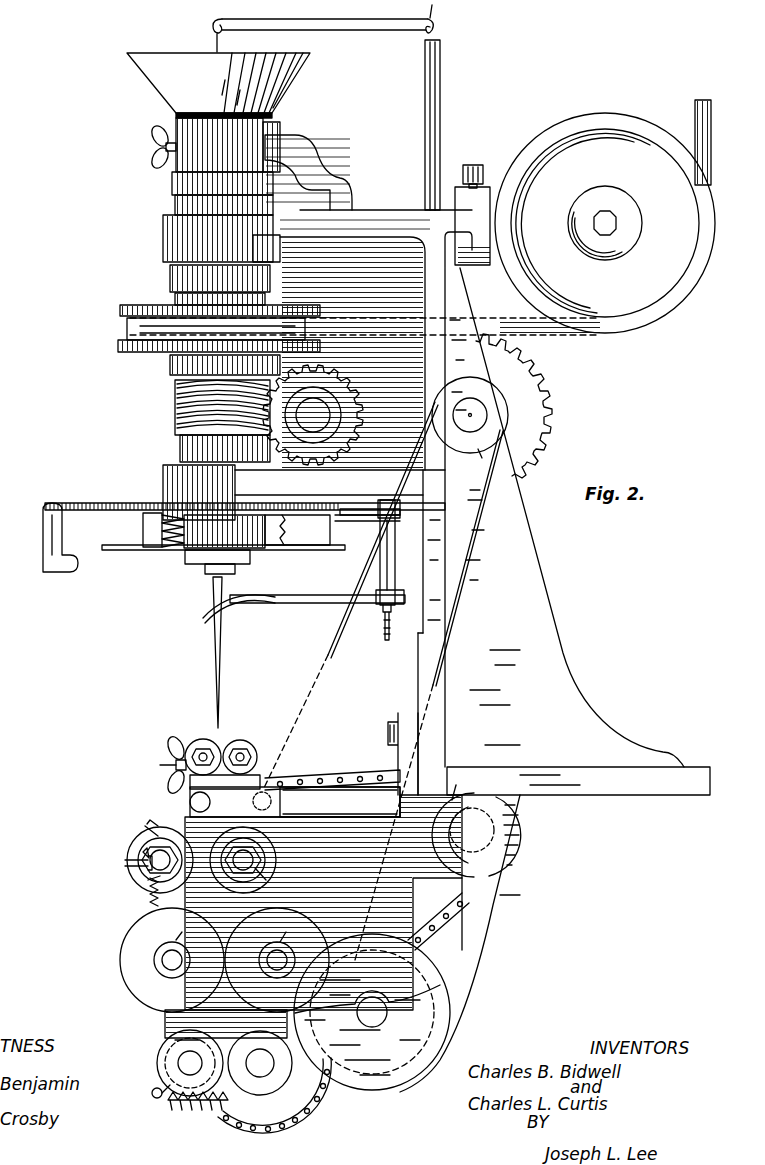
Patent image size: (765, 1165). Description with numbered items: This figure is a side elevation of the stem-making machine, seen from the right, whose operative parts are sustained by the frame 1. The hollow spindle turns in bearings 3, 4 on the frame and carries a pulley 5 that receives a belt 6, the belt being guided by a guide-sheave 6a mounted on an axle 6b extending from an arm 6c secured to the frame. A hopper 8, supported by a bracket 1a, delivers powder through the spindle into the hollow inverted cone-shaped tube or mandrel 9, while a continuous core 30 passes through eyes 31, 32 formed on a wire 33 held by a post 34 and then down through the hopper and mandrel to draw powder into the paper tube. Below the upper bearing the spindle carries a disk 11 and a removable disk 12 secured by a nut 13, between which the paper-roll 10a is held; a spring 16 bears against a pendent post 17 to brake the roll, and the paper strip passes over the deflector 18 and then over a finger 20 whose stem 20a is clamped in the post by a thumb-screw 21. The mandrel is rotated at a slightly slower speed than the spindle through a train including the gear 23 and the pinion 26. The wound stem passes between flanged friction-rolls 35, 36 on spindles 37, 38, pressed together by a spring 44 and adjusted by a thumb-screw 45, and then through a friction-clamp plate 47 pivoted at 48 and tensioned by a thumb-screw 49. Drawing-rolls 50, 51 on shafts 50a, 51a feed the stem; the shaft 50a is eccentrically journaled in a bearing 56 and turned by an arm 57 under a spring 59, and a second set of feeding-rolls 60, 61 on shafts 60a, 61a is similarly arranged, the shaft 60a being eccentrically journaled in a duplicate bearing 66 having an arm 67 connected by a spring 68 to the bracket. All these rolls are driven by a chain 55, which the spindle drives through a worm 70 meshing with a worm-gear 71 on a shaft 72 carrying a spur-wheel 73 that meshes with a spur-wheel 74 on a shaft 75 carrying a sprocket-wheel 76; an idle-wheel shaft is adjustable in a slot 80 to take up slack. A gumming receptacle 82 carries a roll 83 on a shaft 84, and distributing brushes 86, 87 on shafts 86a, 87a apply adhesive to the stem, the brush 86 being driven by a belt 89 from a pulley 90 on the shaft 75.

The frame 1 is at (487, 465).
The bracket 1a is at (200, 130).
The bearing 3 is at (163, 472).
The bearing 4 is at (163, 228).
The pulley 5 is at (118, 346).
The belt 6 is at (560, 336).
The guide-sheave 6a is at (657, 316).
The axle 6b is at (601, 227).
The arm 6c is at (493, 185).
The hopper or funnel 8 is at (218, 85).
The hollow inverted cone-shaped tube or mandrel 9 is at (228, 652).
The paper-roll 10a is at (286, 530).
The disk or extension 11 is at (245, 495).
The removable disk 12 is at (223, 557).
The nut 13 is at (197, 558).
The spring 16 is at (165, 548).
The pendent post or abutment 17 is at (396, 548).
The guide and deflector 18 is at (43, 550).
The finger 20 is at (239, 611).
The bar or stem 20a is at (317, 586).
The thumb-screw 21 is at (383, 634).
The pinion or gear 23 is at (172, 185).
The pinion 26 is at (270, 280).
The core 30 is at (232, 740).
The guide or eye 31 is at (437, 28).
The guide or eye 32 is at (210, 26).
The wire 33 is at (325, 15).
The post 34 is at (441, 140).
The friction-roll 35 is at (250, 750).
The friction-roll 36 is at (197, 742).
The spindle 37 is at (250, 762).
The spindle 38 is at (145, 826).
The spring 44 is at (313, 875).
The thumb-screw 45 is at (170, 752).
The plate 47 is at (295, 802).
The pivot 48 is at (340, 802).
The thumb-screw 49 is at (190, 803).
The friction drawing-roll 50 is at (145, 868).
The shaft 50a is at (148, 880).
The friction drawing-roll 51 is at (250, 852).
The shaft 51a is at (274, 878).
The chain 55 is at (343, 947).
The bearing 56 is at (142, 852).
The arm 57 is at (113, 858).
The spring 59 is at (150, 900).
The feeding-roll 60 is at (160, 1070).
The shaft 60a is at (178, 1060).
The feeding-roll 61 is at (260, 1065).
The shaft 61a is at (263, 1063).
The bracket 66 is at (180, 1040).
The arm 67 is at (156, 1104).
The spring 68 is at (198, 1113).
The worm 70 is at (207, 421).
The worm-gear 71 is at (392, 621).
The shaft 72 is at (313, 415).
The spur-wheel 73 is at (330, 340).
The spur-wheel 74 is at (514, 406).
The shaft 75 is at (470, 415).
The sprocket-wheel 76 is at (370, 524).
The slot 80 is at (495, 880).
The receptacle 82 is at (468, 998).
The roll 83 is at (372, 1012).
The shaft 84 is at (372, 1012).
The distributing brush or disk 86 is at (277, 960).
The shaft 86a is at (284, 930).
The distributing brush or disk 87 is at (290, 889).
The shaft 87a is at (174, 929).
The belt 89 is at (462, 620).
The pulley 90 is at (474, 461).